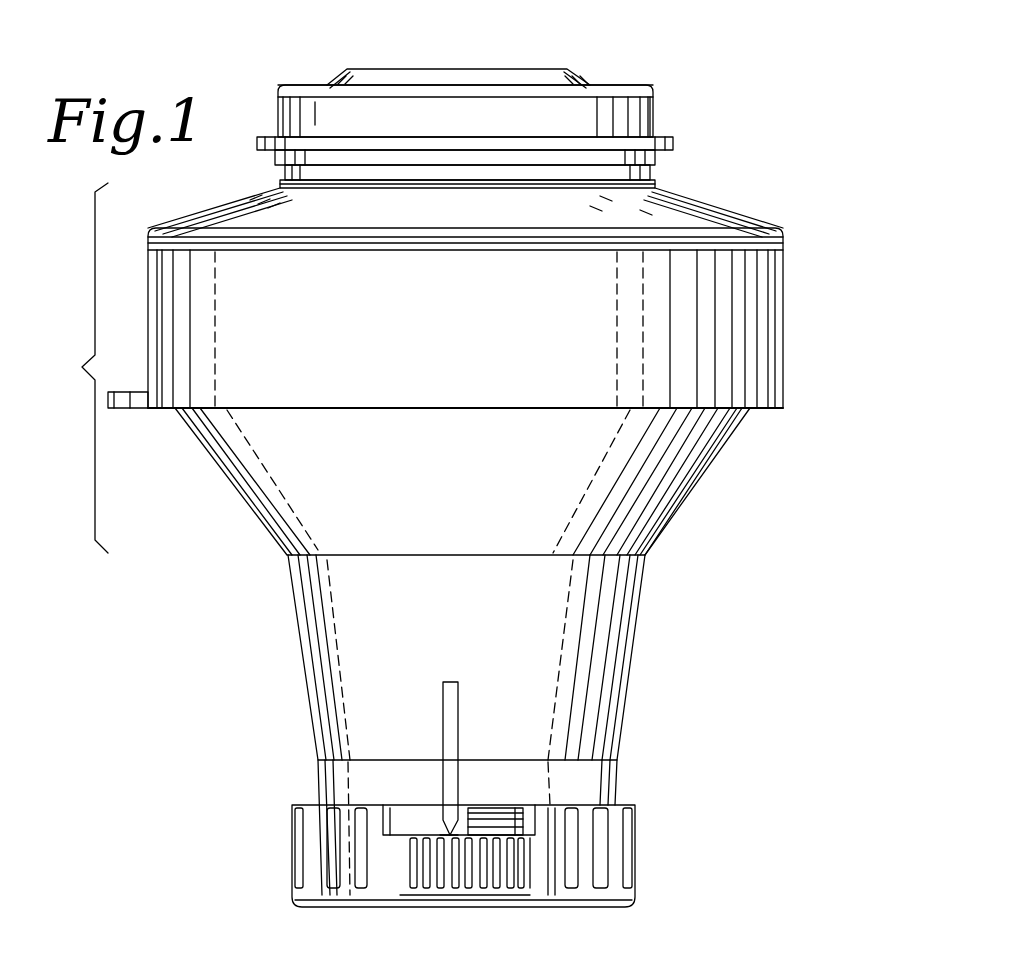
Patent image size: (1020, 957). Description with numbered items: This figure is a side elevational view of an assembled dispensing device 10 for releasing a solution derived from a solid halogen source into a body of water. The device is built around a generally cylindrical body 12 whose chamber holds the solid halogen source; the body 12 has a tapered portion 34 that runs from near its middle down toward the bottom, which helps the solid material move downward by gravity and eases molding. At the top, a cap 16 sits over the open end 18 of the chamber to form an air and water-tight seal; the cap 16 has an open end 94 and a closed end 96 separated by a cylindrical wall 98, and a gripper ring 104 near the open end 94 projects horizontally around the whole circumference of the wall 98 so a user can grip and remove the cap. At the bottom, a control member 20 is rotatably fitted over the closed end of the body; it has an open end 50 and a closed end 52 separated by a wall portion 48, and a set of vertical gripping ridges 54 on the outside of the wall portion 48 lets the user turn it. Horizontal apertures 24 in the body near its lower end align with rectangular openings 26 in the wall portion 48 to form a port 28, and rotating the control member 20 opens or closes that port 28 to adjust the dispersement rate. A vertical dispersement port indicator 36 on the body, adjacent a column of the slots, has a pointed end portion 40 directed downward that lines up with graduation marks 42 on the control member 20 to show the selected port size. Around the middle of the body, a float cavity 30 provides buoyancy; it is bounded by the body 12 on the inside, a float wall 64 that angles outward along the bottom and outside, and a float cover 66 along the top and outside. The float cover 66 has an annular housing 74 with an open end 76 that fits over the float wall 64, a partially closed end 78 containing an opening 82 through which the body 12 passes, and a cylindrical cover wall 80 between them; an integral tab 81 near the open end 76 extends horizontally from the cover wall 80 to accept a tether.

The dispensing device 10 is at (258, 72).
The body 12 is at (655, 605).
The cap 16 is at (668, 86).
The open end 18 is at (280, 198).
The control member 20 is at (648, 900).
The apertures 24 is at (505, 815).
The openings 26 is at (397, 803).
The port 28 is at (417, 808).
The float cavity 30 is at (73, 368).
The tapered portion 34 is at (313, 608).
The dispersement port indicator 36 is at (470, 708).
The pointed end portion 40 is at (417, 840).
The graduation marks 42 is at (524, 878).
The wall portion 48 is at (300, 890).
The open end 50 is at (622, 806).
The closed end 52 is at (470, 905).
The gripping ridges 54 is at (602, 842).
The float wall 64 is at (672, 488).
The float cover 66 is at (718, 258).
The annular housing 74 is at (205, 260).
The open end 76 is at (782, 412).
The partially closed end 78 is at (705, 212).
The cylindrical cover wall 80 is at (785, 292).
The tab 81 is at (113, 410).
The opening 82 is at (660, 185).
The open end 94 is at (300, 176).
The closed end 96 is at (596, 82).
The cylindrical wall 98 is at (656, 110).
The gripper ring 104 is at (675, 140).